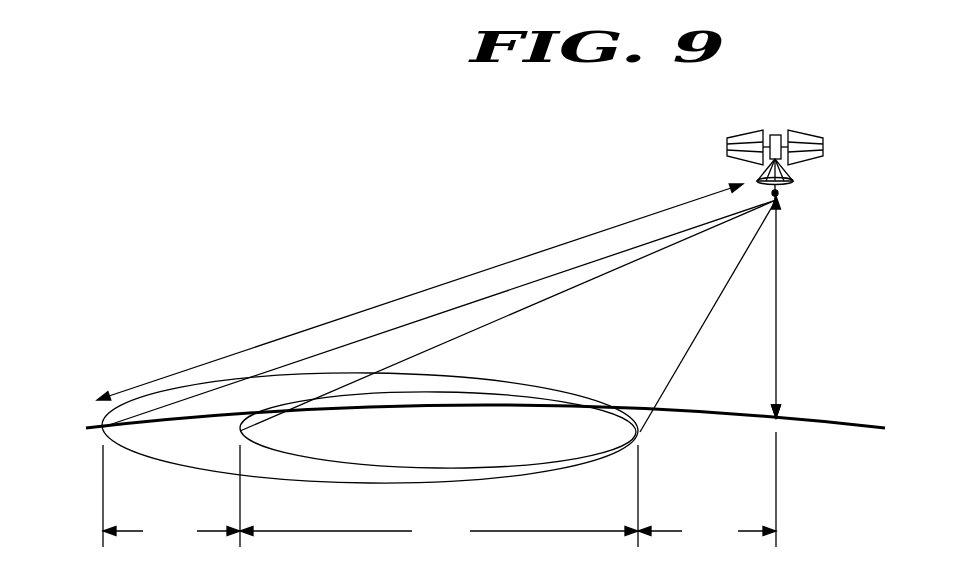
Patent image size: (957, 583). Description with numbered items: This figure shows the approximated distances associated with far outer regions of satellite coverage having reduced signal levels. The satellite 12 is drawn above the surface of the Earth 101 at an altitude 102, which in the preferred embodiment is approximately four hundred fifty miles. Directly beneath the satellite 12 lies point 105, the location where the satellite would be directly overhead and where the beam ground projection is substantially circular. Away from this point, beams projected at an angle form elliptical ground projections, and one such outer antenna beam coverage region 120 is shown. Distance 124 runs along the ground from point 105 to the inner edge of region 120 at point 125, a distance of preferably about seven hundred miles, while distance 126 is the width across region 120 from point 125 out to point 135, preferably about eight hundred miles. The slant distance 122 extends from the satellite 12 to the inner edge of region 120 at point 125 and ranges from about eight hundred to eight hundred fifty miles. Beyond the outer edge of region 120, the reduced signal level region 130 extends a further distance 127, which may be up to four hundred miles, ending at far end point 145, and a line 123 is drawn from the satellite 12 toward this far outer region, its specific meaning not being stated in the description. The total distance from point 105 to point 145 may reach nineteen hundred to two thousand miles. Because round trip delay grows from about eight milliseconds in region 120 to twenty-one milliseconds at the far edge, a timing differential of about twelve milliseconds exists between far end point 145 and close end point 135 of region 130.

The satellite 12 is at (825, 150).
The surface of the Earth 101 is at (855, 426).
The altitude 102 is at (778, 302).
The point directly below satellite 105 is at (770, 412).
The outer antenna beam coverage region 120 is at (497, 391).
The distance from satellite to inner edge of outer beam region 122 is at (712, 330).
The line of sight to far edge / beam axis 123 is at (465, 277).
The distance from sub-satellite point to outer beam region 124 is at (707, 531).
The inner edge point of outer beam region 125 is at (640, 424).
The width of outer antenna beam coverage region 126 is at (439, 531).
The extension distance of reduced signal level region 127 is at (171, 531).
The reduced signal level region 130 is at (146, 398).
The outer edge point of outer beam region 135 is at (236, 424).
The outer edge point of reduced signal level region 145 is at (95, 426).